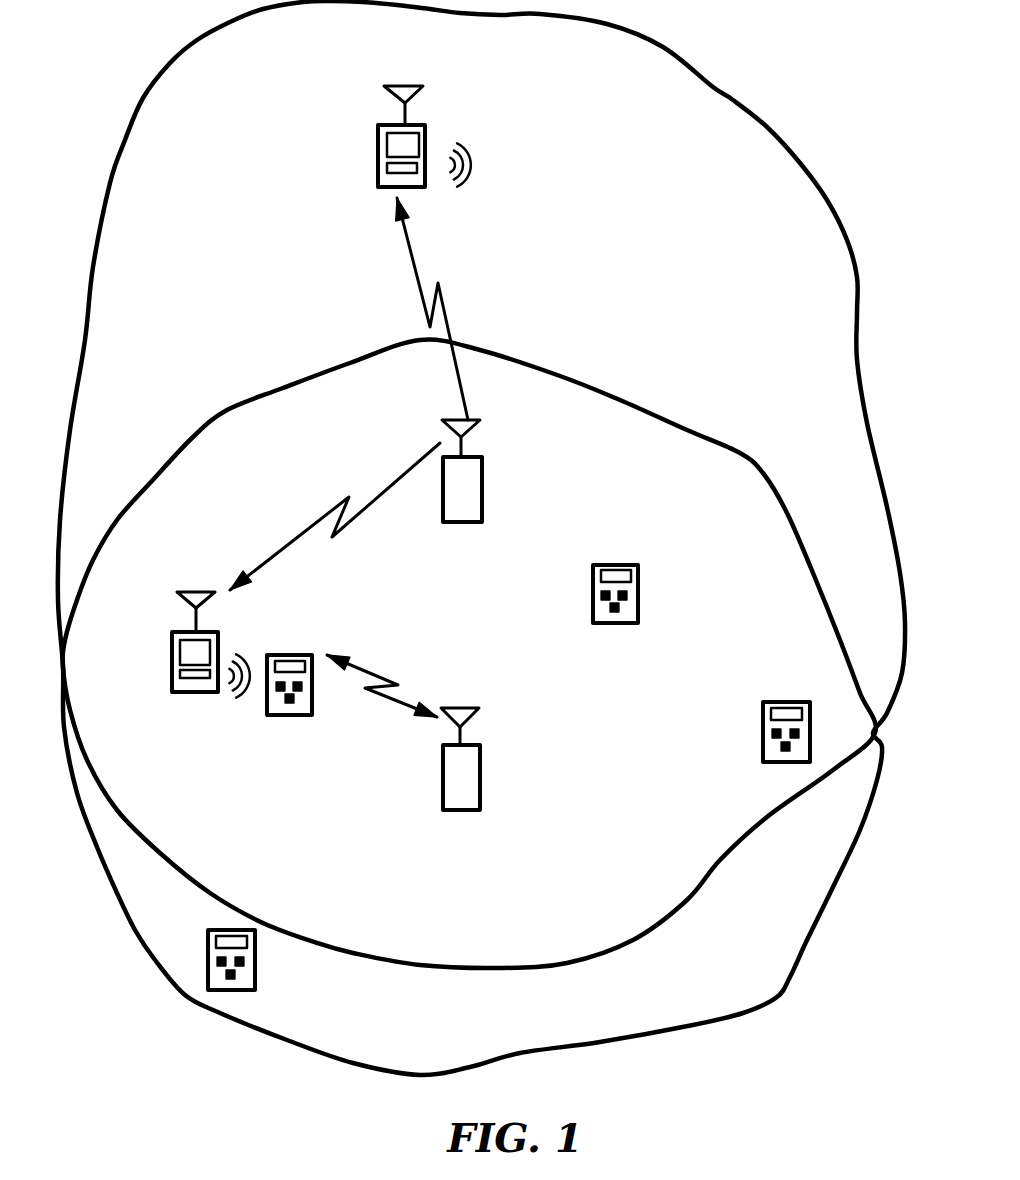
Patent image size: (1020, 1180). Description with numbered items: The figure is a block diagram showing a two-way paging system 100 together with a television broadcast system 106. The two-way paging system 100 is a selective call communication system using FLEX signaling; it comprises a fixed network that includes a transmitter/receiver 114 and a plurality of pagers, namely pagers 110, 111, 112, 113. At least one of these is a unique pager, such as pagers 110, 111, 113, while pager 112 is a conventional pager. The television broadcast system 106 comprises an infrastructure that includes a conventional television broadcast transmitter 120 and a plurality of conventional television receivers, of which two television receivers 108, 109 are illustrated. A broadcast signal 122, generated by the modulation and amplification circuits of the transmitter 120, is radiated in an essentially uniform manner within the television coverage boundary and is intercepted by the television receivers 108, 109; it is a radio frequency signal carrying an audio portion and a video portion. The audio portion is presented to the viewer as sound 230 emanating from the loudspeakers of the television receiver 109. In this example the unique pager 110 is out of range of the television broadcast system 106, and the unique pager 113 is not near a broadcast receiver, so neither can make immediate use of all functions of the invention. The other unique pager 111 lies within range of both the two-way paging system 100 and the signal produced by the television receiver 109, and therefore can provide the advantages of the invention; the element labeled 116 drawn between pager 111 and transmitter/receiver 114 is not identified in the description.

The two-way paging system 100 is at (576, 378).
The television broadcast system 106 is at (663, 47).
The television receiver 108 is at (427, 142).
The television receiver 109 is at (170, 668).
The pager 110 is at (207, 968).
The pager 111 is at (277, 653).
The pager 112 is at (763, 740).
The pager 113 is at (603, 558).
The transmitter/receiver 114 is at (482, 773).
The wireless link 116 is at (377, 672).
The television broadcast transmitter 120 is at (483, 485).
The broadcast signal 122 is at (447, 325).
The sound 230 is at (243, 705).